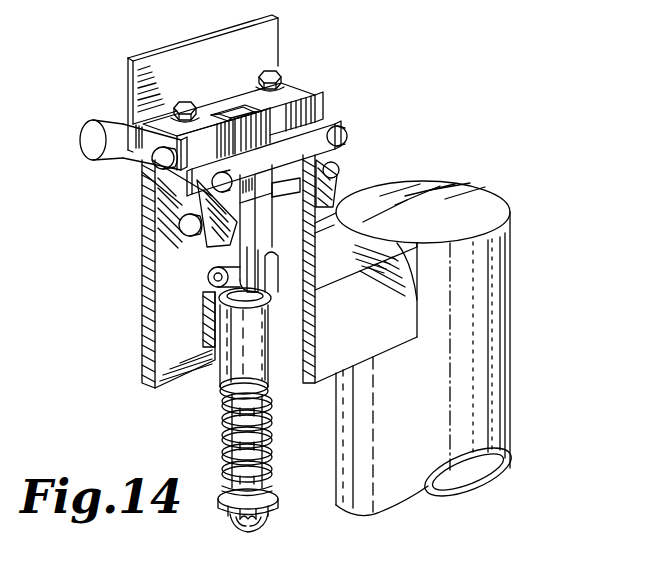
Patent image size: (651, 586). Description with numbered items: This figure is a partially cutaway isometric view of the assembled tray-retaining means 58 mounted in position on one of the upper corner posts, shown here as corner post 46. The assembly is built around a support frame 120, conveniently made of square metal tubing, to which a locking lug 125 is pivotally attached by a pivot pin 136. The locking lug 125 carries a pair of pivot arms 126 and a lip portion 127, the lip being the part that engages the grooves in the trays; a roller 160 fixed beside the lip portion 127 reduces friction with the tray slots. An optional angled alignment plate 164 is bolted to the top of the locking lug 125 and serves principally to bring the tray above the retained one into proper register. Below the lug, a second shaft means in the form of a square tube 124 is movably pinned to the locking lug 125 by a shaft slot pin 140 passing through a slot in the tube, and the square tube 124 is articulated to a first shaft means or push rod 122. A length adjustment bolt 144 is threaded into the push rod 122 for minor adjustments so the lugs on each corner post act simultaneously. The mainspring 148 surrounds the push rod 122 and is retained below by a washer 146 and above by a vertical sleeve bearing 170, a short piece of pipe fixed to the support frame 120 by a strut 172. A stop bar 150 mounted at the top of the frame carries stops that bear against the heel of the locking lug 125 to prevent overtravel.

The corner post 46 is at (497, 348).
The clamp assembly 58 is at (114, 238).
The support frame 120 is at (148, 283).
The push rod 122 is at (232, 437).
The square tube 124 is at (208, 272).
The locking lug 125 is at (310, 110).
The pivot arms 126 is at (173, 185).
The lip portion 127 is at (124, 115).
The pivot pin 136 is at (347, 200).
The shaft slot pin 140 is at (150, 164).
The length adjustment bolt 144 is at (265, 525).
The washer 146 is at (278, 505).
The mainspring 148 is at (307, 427).
The stop bar 150 is at (343, 115).
The roller 160 is at (98, 127).
The angled alignment plate 164 is at (267, 40).
The vertical sleeve bearing 170 is at (220, 380).
The strut 172 is at (214, 363).